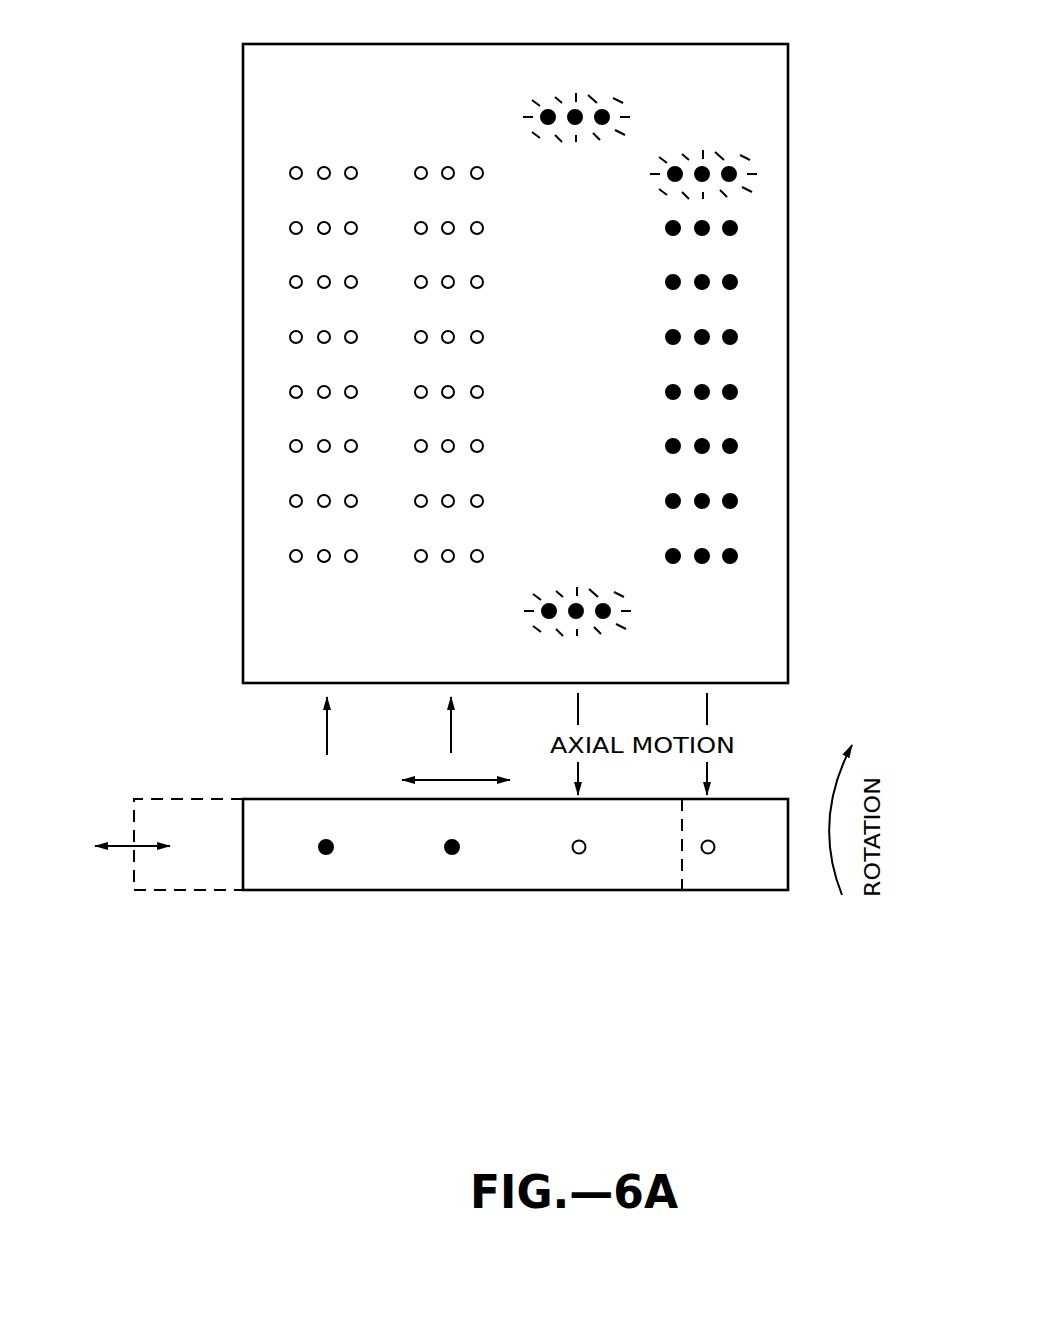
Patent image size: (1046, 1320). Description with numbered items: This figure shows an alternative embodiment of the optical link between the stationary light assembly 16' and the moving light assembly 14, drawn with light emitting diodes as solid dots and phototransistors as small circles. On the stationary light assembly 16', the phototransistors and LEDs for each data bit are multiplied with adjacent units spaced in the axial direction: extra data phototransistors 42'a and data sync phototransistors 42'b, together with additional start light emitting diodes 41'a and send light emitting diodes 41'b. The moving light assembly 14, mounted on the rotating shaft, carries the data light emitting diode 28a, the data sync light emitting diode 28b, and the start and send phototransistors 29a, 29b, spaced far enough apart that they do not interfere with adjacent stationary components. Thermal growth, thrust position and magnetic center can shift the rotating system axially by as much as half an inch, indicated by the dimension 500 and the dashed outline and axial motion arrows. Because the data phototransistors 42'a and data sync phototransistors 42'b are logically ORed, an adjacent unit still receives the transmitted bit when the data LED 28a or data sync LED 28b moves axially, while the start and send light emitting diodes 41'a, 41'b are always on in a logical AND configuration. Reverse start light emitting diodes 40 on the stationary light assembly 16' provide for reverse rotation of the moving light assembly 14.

The stationary light assembly 16' is at (503, 348).
The data phototransistors 42'a is at (237, 347).
The data sync phototransistors 42'b is at (277, 295).
The start light emitting diodes 41'a is at (716, 102).
The send light emitting diodes 41'b is at (769, 176).
The reverse start light emitting diodes 40 is at (644, 608).
The moving light assembly 14 is at (497, 936).
The data light emitting diode 28a is at (323, 856).
The data sync light emitting diode 28b is at (449, 856).
The start phototransistor 29a is at (577, 856).
The send phototransistor 29b is at (708, 856).
The axial displacement (0.500 inch) 500 is at (55, 770).